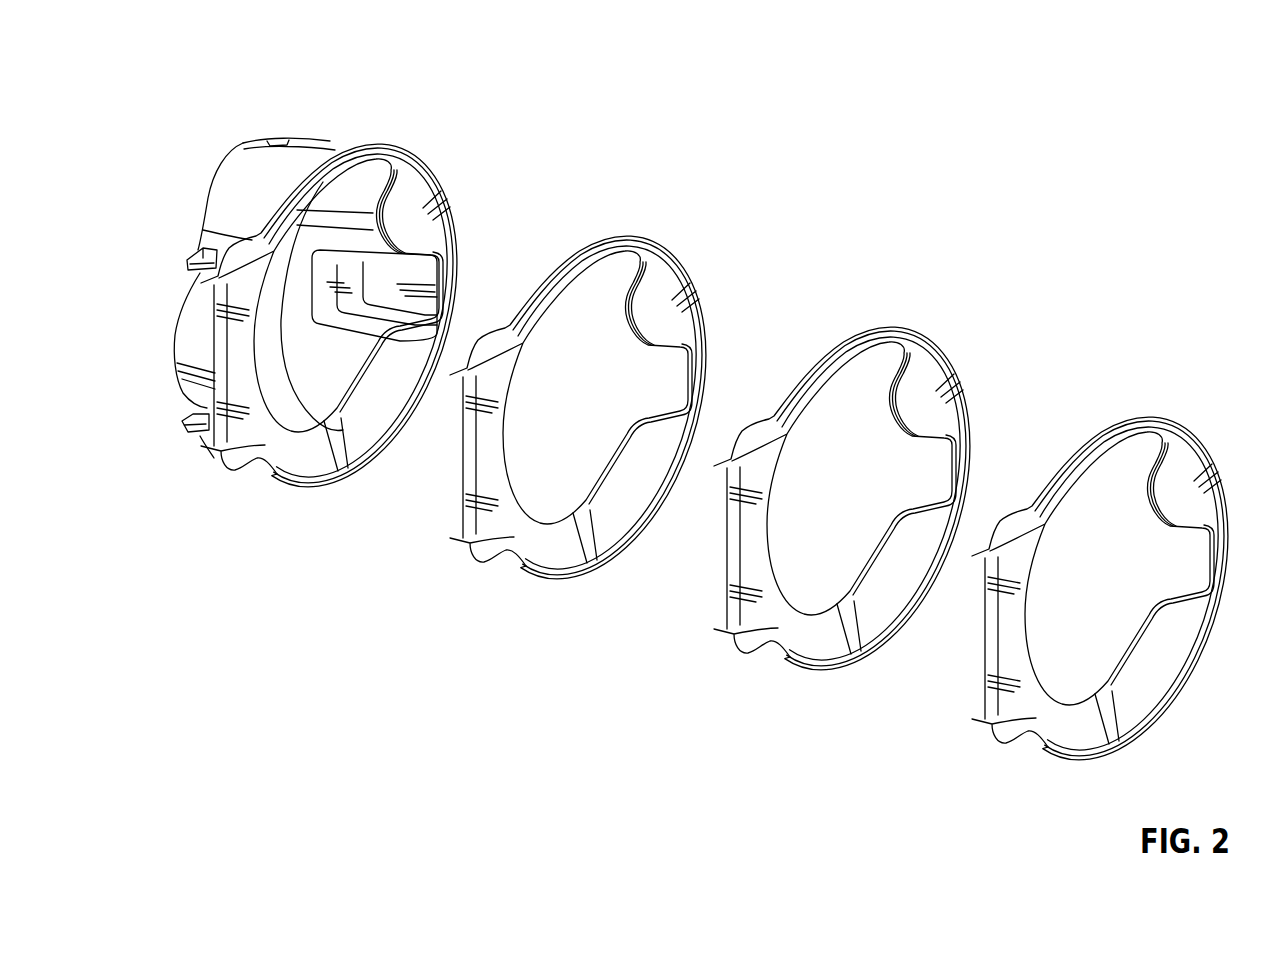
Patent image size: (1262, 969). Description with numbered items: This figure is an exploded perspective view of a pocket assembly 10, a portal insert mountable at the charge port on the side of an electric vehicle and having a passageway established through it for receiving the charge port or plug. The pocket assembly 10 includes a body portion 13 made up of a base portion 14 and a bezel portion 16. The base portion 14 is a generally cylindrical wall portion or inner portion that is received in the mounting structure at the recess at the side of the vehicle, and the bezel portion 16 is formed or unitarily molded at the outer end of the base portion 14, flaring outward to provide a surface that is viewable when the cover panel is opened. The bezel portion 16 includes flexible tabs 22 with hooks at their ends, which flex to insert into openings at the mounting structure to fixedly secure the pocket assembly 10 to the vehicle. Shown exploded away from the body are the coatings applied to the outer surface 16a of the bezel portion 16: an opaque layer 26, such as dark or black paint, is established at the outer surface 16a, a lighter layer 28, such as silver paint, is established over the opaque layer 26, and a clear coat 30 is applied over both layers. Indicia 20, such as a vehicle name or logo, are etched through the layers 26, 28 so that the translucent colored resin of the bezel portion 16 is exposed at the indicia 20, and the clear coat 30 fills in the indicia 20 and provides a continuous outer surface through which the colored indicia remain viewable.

The pocket assembly 10 is at (876, 99).
The body portion 13 is at (387, 115).
The base portion 14 is at (248, 178).
The bezel portion 16 is at (305, 491).
The outer surface of bezel portion 16a is at (358, 432).
The indicia 20 is at (617, 533).
The flexible tabs 22 is at (189, 271).
The opaque layer 26 is at (637, 186).
The lighter layer 28 is at (887, 283).
The clear coat 30 is at (1137, 359).